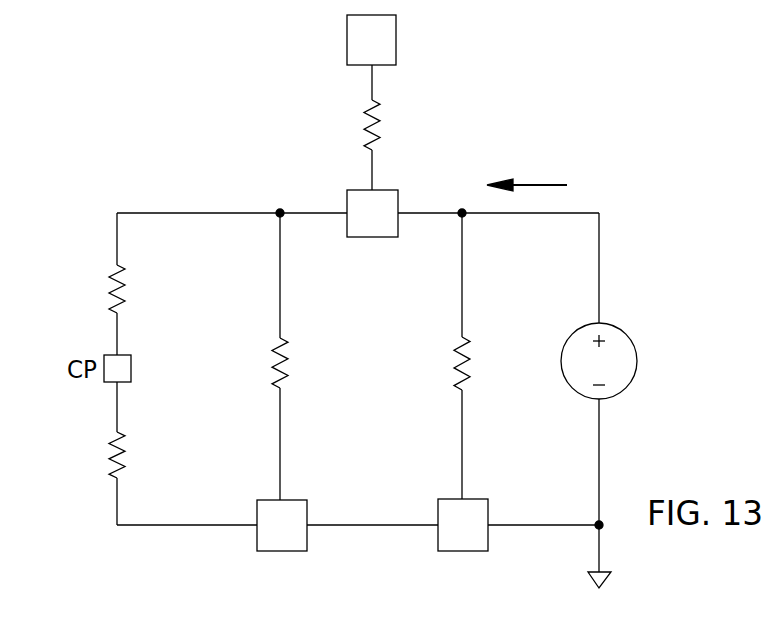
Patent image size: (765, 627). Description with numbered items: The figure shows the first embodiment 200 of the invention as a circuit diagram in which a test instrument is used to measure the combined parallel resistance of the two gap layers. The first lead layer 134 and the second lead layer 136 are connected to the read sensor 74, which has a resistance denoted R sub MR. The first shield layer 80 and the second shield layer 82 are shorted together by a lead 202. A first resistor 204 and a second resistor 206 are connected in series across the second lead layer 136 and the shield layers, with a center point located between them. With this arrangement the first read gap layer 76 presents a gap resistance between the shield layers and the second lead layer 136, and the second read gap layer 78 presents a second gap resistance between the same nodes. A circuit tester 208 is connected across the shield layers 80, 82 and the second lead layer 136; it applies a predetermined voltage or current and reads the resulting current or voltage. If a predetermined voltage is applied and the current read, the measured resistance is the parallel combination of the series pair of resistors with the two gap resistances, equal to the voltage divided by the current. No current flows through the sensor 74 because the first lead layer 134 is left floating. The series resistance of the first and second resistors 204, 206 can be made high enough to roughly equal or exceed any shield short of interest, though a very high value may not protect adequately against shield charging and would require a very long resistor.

The first embodiment 200 is at (500, 79).
The first lead layer 134 is at (347, 34).
The read sensor 74 is at (365, 128).
The second lead layer 136 is at (347, 192).
The first resistor 204 is at (112, 290).
The second resistor 206 is at (110, 455).
The first read gap layer 76 is at (275, 364).
The second read gap layer 78 is at (455, 364).
The first shield layer 80 is at (265, 500).
The second shield layer 82 is at (445, 500).
The lead 202 is at (380, 526).
The circuit tester 208 is at (634, 341).